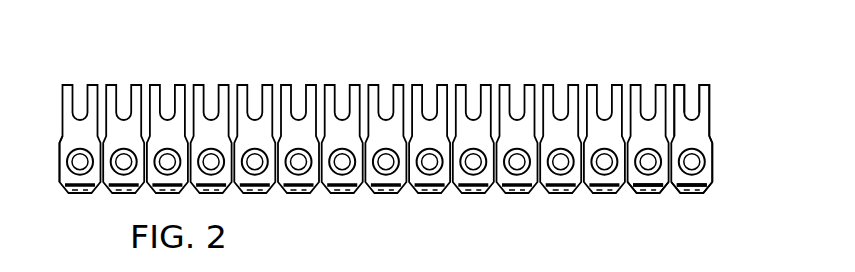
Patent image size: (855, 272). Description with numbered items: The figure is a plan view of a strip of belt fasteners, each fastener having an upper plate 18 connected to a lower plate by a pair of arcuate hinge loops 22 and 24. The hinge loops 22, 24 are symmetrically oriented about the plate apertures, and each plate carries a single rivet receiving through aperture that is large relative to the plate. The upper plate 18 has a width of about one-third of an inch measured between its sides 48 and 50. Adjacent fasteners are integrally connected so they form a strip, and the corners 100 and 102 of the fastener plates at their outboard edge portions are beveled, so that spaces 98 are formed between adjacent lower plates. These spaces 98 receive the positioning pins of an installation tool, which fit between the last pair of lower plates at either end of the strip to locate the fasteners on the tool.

The upper plate 18 is at (714, 139).
The arcuate hinge loop 22 is at (680, 84).
The arcuate hinge loop 24 is at (704, 84).
The side of upper plate 48 is at (60, 162).
The side of upper plate 50 is at (716, 157).
The space between adjacent lower plates 98 is at (671, 185).
The beveled corner 100 is at (632, 185).
The beveled corner 102 is at (666, 187).